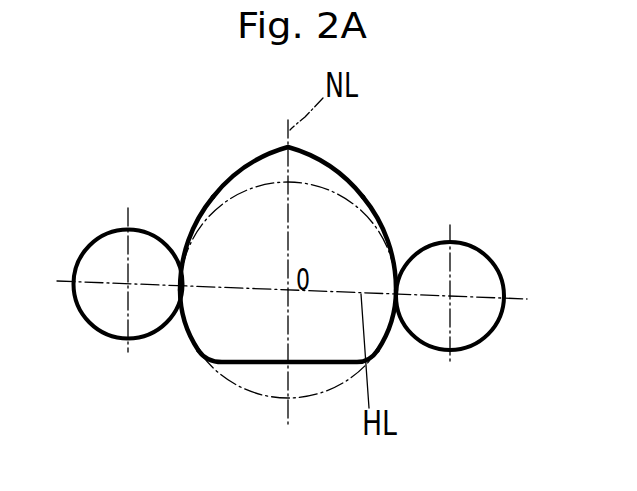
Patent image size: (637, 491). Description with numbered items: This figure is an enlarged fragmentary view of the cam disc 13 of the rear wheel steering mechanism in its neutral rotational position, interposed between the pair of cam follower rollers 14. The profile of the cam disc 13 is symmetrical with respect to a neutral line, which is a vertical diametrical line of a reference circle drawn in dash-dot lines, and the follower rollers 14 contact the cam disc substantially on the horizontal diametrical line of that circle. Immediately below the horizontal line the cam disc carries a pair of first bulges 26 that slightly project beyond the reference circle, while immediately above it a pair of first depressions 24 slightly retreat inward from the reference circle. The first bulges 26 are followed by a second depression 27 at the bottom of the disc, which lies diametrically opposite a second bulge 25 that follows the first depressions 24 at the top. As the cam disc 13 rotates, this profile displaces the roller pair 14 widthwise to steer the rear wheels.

The cam disc 13 is at (296, 281).
The cam follower rollers 14 is at (96, 238).
The first depressions 24 is at (188, 246).
The second bulge 25 is at (240, 172).
The first bulges 26 is at (183, 330).
The second depression 27 is at (310, 365).